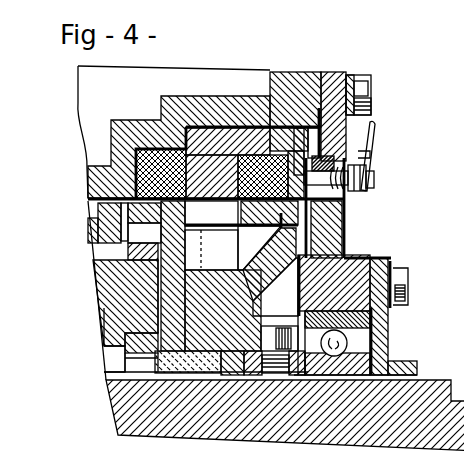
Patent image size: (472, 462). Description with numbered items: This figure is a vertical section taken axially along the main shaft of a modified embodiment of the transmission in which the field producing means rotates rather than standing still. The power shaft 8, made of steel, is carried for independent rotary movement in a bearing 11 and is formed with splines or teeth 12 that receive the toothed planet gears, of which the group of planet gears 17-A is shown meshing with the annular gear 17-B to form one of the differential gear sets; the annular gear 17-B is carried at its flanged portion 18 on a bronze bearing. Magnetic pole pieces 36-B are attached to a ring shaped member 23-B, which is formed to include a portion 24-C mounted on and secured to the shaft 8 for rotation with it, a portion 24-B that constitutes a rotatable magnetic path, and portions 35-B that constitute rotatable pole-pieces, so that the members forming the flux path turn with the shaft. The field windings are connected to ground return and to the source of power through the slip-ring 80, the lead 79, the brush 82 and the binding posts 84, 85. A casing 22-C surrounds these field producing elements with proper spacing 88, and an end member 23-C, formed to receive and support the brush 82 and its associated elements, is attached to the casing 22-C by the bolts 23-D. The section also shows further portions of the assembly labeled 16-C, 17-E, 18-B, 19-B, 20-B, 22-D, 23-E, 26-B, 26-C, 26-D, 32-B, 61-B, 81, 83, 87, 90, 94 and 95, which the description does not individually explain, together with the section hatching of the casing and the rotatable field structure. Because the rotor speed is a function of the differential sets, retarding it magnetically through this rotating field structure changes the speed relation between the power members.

The power shaft 8 is at (436, 383).
The bearing 11 is at (363, 334).
The splines 12 is at (100, 342).
The body 16-C is at (97, 268).
The planet gears 17-A is at (123, 253).
The annular gear 17-B is at (80, 193).
The slot 17-E is at (128, 221).
The flanged portion 18 is at (90, 306).
The notch 18-B is at (98, 370).
The passage 19-B is at (250, 256).
The chamber 20-B is at (272, 268).
The casing 22-C is at (78, 164).
The housing cover 22-D is at (75, 100).
The ring shaped member 23-B is at (336, 65).
The end member 23-C is at (356, 246).
The bolts 23-D is at (354, 78).
The threaded element 23-E is at (277, 373).
The rotatable magnetic path portion 24-B is at (211, 276).
The shaft-mounted portion 24-C is at (190, 366).
The plate 26-B is at (380, 252).
The bracket 26-C is at (399, 262).
The screw 26-D is at (402, 288).
The block 32-B is at (286, 54).
The rotatable pole-pieces 35-B is at (117, 238).
The magnetic pole pieces 36-B is at (200, 138).
The wall portion 61-B is at (336, 220).
The lead 79 is at (361, 102).
The slip-ring 80 is at (349, 176).
The rod 81 is at (368, 130).
The brush 82 is at (336, 133).
The shaft 83 is at (338, 193).
The binding post 84 is at (370, 162).
The binding post 85 is at (360, 177).
The washer 87 is at (366, 147).
The spacing 88 is at (147, 138).
The element 90 is at (459, 322).
The block 94 is at (363, 316).
The screw 95 is at (221, 383).